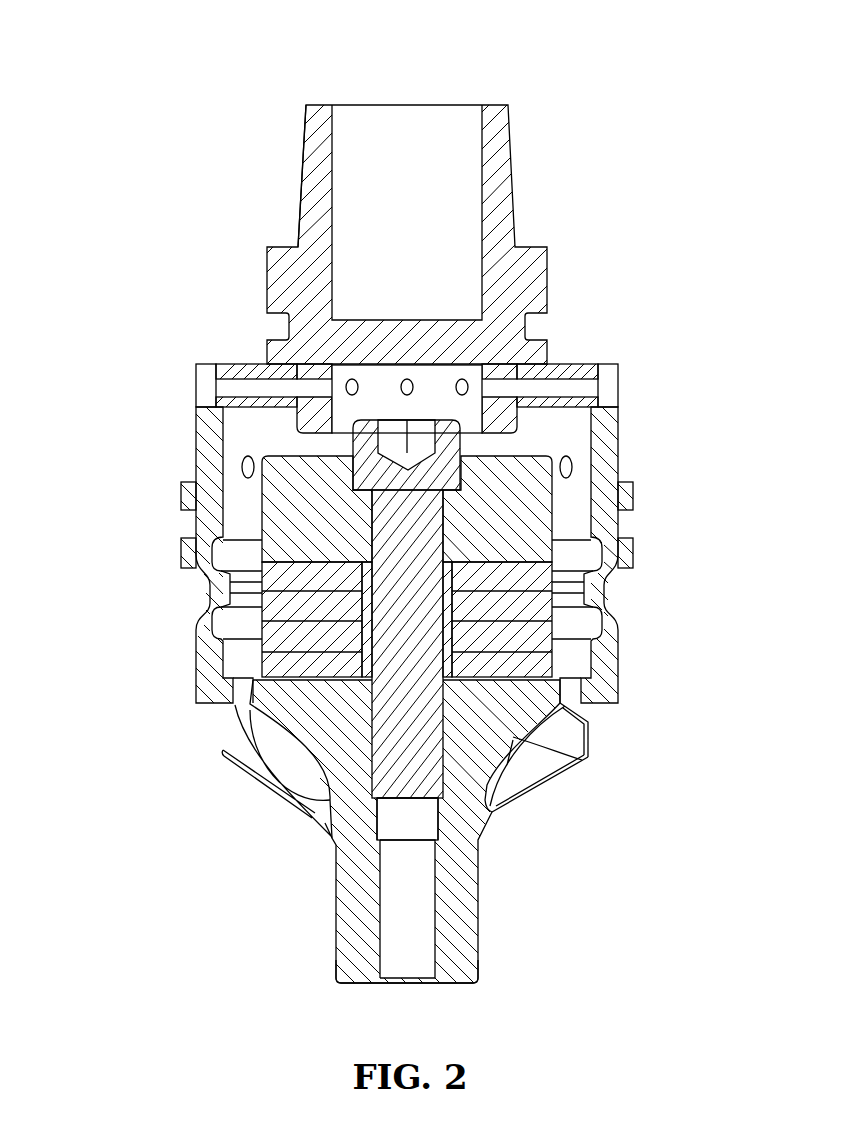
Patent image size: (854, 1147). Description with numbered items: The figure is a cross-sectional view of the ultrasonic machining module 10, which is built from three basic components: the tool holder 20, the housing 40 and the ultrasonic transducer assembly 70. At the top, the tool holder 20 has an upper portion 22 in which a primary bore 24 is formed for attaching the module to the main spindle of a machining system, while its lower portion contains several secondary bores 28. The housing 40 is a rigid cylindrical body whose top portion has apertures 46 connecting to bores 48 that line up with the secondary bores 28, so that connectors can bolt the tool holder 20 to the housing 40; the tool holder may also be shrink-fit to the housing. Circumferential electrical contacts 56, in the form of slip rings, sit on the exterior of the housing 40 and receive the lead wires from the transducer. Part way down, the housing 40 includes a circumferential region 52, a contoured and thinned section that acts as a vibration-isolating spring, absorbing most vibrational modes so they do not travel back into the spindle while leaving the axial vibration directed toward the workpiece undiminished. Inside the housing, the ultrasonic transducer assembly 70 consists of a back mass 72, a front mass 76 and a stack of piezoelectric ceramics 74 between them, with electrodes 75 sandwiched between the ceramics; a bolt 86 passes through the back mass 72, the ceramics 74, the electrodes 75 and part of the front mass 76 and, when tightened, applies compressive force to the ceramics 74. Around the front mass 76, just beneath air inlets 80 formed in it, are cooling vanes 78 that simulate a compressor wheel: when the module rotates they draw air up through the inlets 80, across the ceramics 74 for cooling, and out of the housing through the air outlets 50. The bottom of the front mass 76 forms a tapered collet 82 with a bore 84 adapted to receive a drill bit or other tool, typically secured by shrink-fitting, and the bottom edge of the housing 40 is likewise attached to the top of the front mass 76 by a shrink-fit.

The ultrasonic machining module 10 is at (379, 514).
The tool holder 20 is at (514, 157).
The upper portion 22 is at (301, 192).
The primary bore 24 is at (333, 106).
The secondary bores 28 is at (312, 383).
The housing 40 is at (620, 676).
The apertures 46 is at (197, 382).
The bores 48 is at (230, 380).
The air outlets 50 is at (242, 463).
The circumferential region 52 is at (196, 596).
The circumferential electrical contacts 56 is at (183, 495).
The ultrasonic transducer assembly 70 is at (479, 922).
The back mass 72 is at (555, 522).
The piezoelectric ceramics 74 is at (262, 646).
The electrodes 75 is at (262, 552).
The front mass 76 is at (575, 758).
The cooling vanes 78 is at (262, 782).
The air inlets 80 is at (233, 704).
The tapered collet 82 is at (478, 970).
The bore 84 is at (436, 983).
The bolt 86 is at (392, 805).